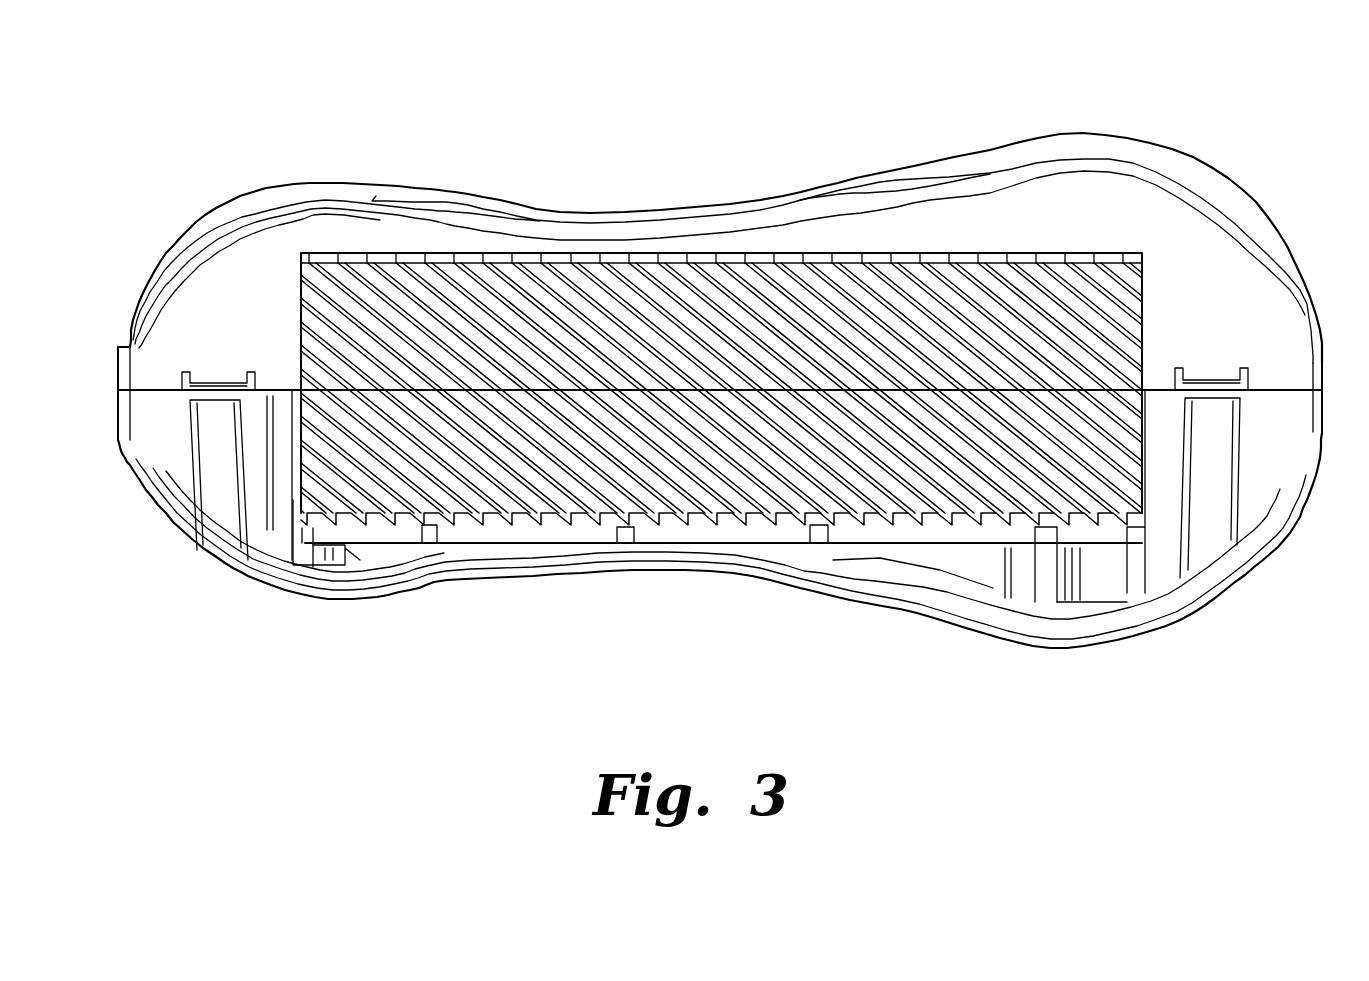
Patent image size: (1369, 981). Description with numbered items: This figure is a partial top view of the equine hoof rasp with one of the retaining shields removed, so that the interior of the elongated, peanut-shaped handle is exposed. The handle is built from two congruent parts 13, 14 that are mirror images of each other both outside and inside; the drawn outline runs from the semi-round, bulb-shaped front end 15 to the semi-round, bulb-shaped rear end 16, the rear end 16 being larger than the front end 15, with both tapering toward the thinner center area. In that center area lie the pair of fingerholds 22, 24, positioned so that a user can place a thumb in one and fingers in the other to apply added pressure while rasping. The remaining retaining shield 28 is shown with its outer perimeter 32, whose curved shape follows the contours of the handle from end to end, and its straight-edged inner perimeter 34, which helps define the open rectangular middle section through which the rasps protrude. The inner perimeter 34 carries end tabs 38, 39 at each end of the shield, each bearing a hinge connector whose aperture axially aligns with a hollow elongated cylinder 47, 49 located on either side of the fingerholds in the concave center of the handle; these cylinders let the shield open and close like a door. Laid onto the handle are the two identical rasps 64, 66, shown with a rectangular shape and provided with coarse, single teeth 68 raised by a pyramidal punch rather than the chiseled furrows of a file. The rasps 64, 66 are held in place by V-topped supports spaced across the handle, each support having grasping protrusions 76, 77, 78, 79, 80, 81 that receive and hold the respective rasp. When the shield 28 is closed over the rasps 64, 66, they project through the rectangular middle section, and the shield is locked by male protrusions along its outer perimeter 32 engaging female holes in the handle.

The congruent handle part 13 is at (1045, 650).
The congruent handle part 14 is at (1124, 137).
The front end 15 is at (118, 498).
The rear end 16 is at (1333, 272).
The fingerhold 22 is at (676, 574).
The fingerhold 24 is at (618, 211).
The retaining shield 28 is at (1033, 195).
The outer perimeter 32 is at (458, 232).
The inner perimeter 34 is at (297, 283).
The end tab 38 is at (172, 297).
The end tab 39 is at (1215, 243).
The hollow elongated cylinder 47 is at (1232, 492).
The hollow elongated cylinder 49 is at (214, 510).
The rasp 64 is at (374, 574).
The rasp 66 is at (364, 258).
The teeth 68 is at (556, 522).
The grasping protrusion 76 is at (305, 522).
The grasping protrusion 77 is at (428, 545).
The grasping protrusion 78 is at (628, 532).
The grasping protrusion 79 is at (822, 540).
The grasping protrusion 80 is at (1042, 537).
The grasping protrusion 81 is at (1144, 550).